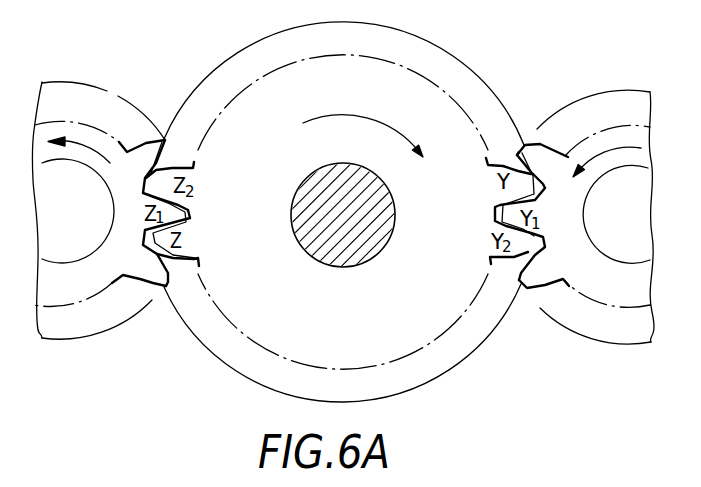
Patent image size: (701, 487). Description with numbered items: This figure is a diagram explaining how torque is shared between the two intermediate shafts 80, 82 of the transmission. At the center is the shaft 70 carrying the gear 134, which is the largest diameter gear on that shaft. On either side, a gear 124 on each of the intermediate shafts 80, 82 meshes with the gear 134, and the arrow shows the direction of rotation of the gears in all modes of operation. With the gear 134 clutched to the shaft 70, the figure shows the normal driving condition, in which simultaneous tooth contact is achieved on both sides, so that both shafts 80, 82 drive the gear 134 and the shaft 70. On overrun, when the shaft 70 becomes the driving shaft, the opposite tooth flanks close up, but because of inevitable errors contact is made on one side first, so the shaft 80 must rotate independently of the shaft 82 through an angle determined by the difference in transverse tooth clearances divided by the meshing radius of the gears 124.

The shaft 70 is at (306, 191).
The intermediate shaft 80 is at (65, 253).
The intermediate shaft 82 is at (623, 258).
The gears 124 is at (108, 152).
The gear 134 is at (437, 117).